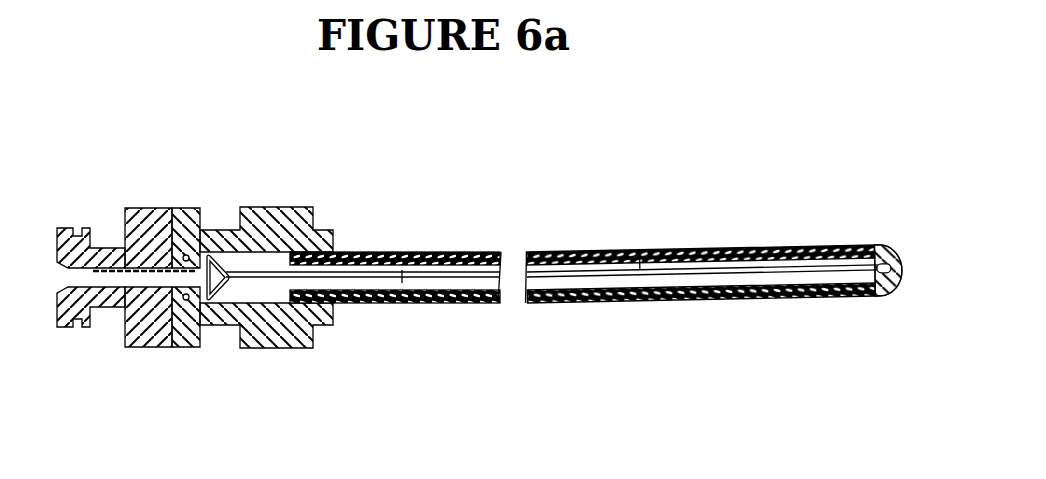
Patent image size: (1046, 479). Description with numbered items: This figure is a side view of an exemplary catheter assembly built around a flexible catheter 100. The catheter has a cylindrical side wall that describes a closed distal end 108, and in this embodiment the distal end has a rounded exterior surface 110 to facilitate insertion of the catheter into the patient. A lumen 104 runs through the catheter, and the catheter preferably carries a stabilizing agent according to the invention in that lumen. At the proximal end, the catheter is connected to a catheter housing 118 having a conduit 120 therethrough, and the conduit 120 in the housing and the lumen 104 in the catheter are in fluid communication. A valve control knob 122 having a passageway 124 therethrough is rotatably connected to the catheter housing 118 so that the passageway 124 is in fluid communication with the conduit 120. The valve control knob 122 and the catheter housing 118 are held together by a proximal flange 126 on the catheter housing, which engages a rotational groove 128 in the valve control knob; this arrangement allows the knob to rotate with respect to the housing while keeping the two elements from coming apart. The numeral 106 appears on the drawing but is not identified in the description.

The flexible catheter 100 is at (363, 277).
The lumen 104 is at (847, 229).
The outer tube wall 106 is at (350, 304).
The closed distal end 108 is at (887, 294).
The rounded exterior surface 110 is at (895, 243).
The catheter housing 118 is at (279, 208).
The conduit 120 is at (272, 293).
The valve control knob 122 is at (128, 343).
The passageway 124 is at (102, 281).
The proximal flange 126 is at (168, 233).
The rotational groove 128 is at (173, 340).